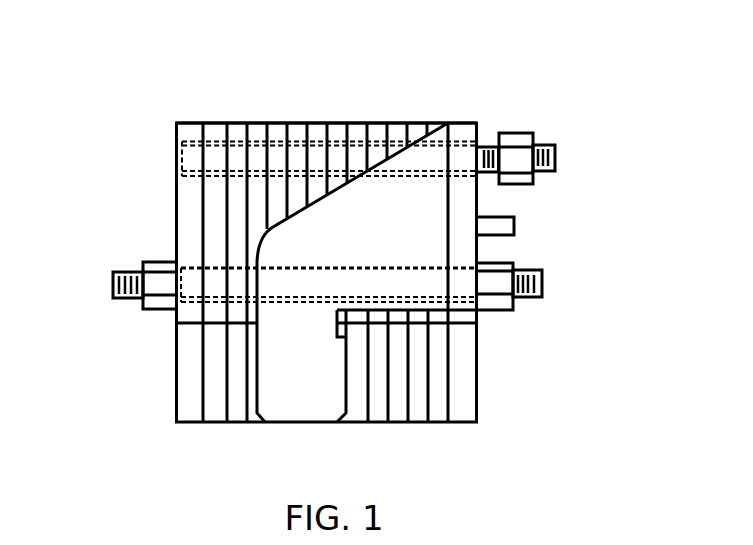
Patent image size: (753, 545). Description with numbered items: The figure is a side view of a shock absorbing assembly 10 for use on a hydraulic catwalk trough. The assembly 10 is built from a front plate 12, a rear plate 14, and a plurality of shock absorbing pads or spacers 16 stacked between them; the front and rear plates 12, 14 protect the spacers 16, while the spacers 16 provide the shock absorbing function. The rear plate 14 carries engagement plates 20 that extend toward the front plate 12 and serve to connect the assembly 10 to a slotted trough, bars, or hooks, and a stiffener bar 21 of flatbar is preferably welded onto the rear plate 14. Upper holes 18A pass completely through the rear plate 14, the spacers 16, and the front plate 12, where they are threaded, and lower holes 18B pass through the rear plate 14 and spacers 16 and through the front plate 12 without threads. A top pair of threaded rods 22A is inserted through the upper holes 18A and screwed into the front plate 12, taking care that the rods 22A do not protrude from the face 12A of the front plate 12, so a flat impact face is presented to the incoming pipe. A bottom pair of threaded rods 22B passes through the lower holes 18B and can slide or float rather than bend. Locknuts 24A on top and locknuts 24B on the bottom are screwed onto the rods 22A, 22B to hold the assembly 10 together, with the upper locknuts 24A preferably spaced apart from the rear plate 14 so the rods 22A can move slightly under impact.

The shock absorbing assembly 10 is at (262, 83).
The front plate 12 is at (193, 422).
The face of the front plate 12A is at (177, 122).
The rear plate 14 is at (467, 123).
The shock absorbing pads or spacers 16 is at (377, 123).
The upper holes 18A is at (177, 150).
The lower holes 18B is at (197, 301).
The engagement plates 20 is at (412, 236).
The stiffener bar 21 is at (515, 226).
The threaded rods (top pair) 22A is at (555, 158).
The threaded rods (bottom pair) 22B is at (542, 287).
The locknuts (top) 24A is at (517, 130).
The locknuts (bottom) 24B is at (497, 260).